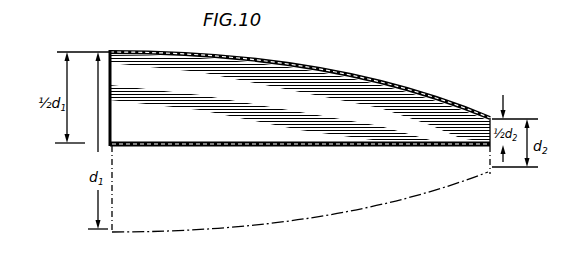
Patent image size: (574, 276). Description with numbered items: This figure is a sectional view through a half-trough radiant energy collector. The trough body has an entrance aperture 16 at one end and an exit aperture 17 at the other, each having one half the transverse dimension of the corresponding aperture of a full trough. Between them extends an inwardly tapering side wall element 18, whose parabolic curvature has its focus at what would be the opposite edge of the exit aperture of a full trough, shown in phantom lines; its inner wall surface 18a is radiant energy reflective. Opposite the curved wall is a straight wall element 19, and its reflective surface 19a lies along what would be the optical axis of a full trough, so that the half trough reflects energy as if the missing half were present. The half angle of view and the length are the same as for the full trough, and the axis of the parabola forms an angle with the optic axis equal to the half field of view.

The entrance aperture 16 is at (110, 130).
The exit aperture 17 is at (490, 117).
The inwardly tapering side wall element 18 is at (357, 74).
The inner wall surface of side wall element 18a is at (240, 58).
The straight wall element 19 is at (258, 148).
The reflective surface of straight wall element 19a is at (288, 138).